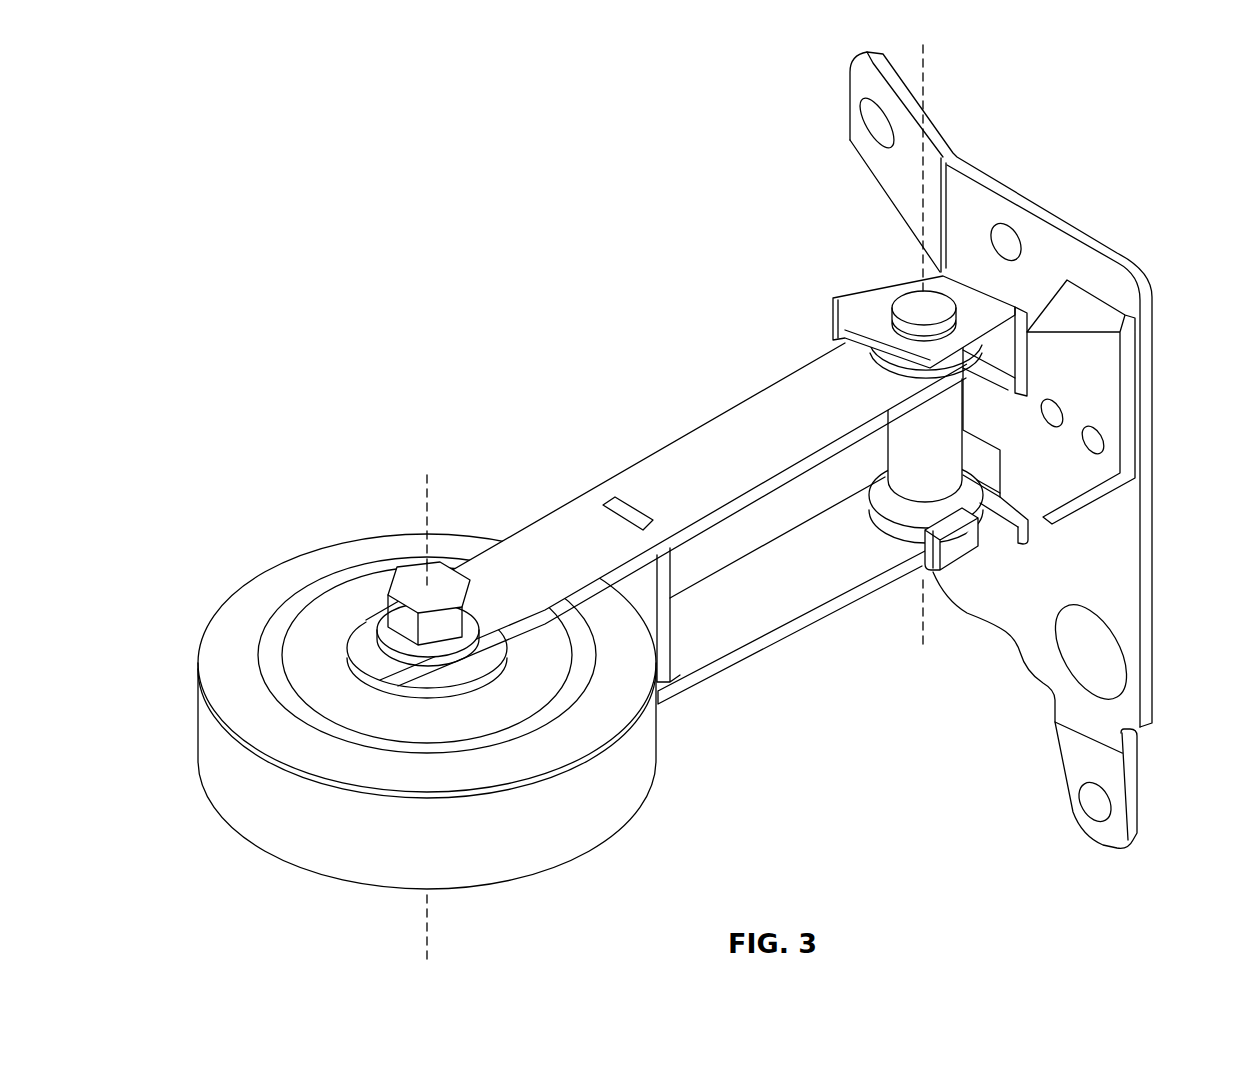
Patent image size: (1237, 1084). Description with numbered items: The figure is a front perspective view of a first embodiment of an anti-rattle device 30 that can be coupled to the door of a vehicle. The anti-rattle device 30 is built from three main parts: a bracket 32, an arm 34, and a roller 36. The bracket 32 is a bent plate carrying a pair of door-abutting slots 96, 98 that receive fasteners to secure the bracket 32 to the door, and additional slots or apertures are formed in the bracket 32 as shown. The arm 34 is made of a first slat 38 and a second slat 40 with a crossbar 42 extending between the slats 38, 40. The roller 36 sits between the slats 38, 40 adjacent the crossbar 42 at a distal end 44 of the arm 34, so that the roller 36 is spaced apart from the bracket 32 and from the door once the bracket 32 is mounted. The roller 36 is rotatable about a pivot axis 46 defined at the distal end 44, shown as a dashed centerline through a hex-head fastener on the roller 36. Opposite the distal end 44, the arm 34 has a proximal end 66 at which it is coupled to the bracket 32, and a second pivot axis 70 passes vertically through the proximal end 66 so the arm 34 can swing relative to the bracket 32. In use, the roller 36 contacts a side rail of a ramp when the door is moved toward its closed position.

The anti-rattle device 30 is at (1110, 72).
The bracket 32 is at (1126, 558).
The arm 34 is at (784, 611).
The roller 36 is at (278, 568).
The first slat 38 is at (724, 638).
The second slat 40 is at (692, 441).
The crossbar 42 is at (668, 560).
The distal end 44 is at (493, 575).
The pivot axis 46 is at (434, 492).
The proximal end 66 is at (832, 375).
The pivot axis 70 is at (928, 76).
The door-abutting slot 96 is at (858, 115).
The door-abutting slot 98 is at (1112, 794).